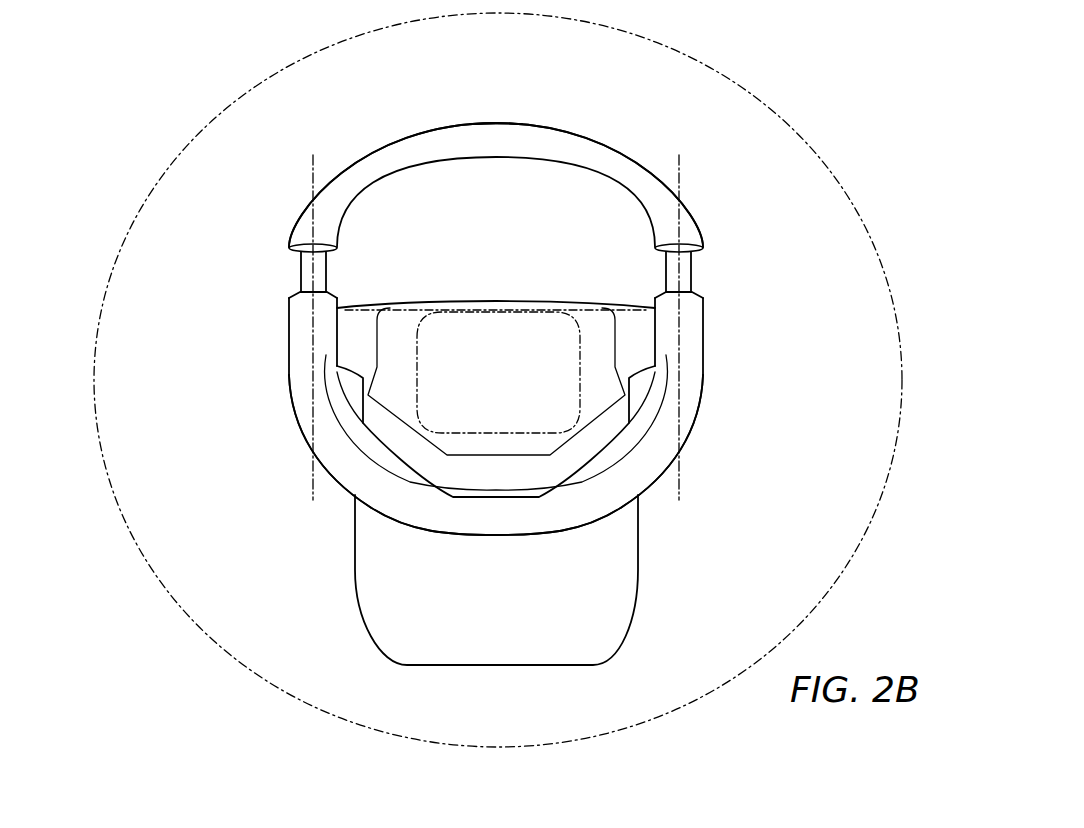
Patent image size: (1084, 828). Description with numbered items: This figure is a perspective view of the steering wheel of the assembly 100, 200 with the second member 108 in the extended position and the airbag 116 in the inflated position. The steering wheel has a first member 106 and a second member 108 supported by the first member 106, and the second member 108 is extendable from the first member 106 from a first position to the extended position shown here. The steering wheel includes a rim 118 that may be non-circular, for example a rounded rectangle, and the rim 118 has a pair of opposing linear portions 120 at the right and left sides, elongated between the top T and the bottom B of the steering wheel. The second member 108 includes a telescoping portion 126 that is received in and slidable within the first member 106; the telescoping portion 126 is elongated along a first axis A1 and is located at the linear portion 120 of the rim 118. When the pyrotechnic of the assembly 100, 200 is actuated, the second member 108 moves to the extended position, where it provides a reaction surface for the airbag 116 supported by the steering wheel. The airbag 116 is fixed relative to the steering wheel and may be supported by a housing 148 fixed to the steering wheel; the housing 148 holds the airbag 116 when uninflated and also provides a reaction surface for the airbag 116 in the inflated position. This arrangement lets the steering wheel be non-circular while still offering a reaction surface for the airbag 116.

The assembly 100 is at (471, 361).
The assembly 200 is at (221, 157).
The first member 106 is at (357, 481).
The second member 108 is at (397, 153).
The airbag 116 is at (733, 77).
The rim 118 is at (693, 207).
The linear portions 120 is at (290, 327).
The telescoping portion 126 is at (305, 265).
The housing 148 is at (463, 330).
The top T is at (496, 121).
The bottom B is at (503, 536).
The first axis A1 is at (312, 479).